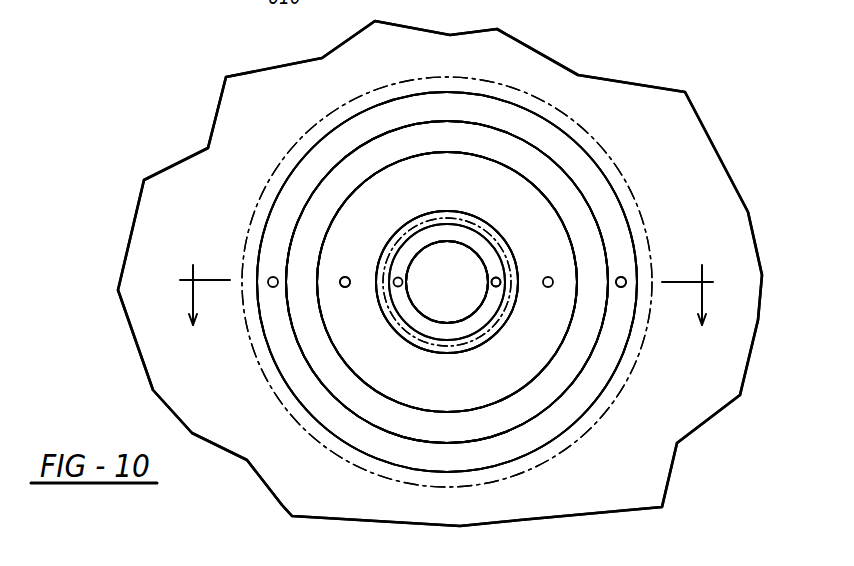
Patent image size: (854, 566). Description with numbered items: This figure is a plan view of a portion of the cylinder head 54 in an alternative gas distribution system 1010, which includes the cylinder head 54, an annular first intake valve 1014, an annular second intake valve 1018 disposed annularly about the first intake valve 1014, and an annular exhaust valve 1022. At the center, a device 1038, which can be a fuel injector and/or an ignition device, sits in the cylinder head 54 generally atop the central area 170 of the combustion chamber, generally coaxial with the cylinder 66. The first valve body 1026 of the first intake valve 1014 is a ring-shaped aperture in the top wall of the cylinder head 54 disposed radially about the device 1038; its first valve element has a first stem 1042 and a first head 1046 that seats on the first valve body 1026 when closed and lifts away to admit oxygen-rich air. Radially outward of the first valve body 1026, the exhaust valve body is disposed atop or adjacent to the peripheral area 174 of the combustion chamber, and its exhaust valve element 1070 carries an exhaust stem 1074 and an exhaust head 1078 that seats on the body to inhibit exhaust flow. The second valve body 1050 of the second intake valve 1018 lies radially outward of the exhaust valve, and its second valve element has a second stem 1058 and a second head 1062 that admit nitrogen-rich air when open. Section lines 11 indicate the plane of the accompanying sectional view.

The section line 11 is at (445, 318).
The cylinder head 54 is at (187, 215).
The cylinder 66 is at (560, 452).
The central area 170 is at (449, 308).
The peripheral area 174 is at (588, 378).
The gas distribution system 1010 is at (300, 118).
The first intake valve 1014 is at (443, 235).
The second intake valve 1018 is at (570, 158).
The exhaust valve 1022 is at (325, 345).
The first valve body 1026 is at (453, 220).
The device 1038 is at (464, 292).
The first stem 1042 is at (497, 276).
The first head 1046 is at (477, 243).
The second valve body 1050 is at (598, 163).
The second stem 1058 is at (622, 277).
The second head 1062 is at (603, 203).
The exhaust valve element 1070 is at (373, 390).
The exhaust stem 1074 is at (345, 287).
The exhaust head 1078 is at (350, 352).